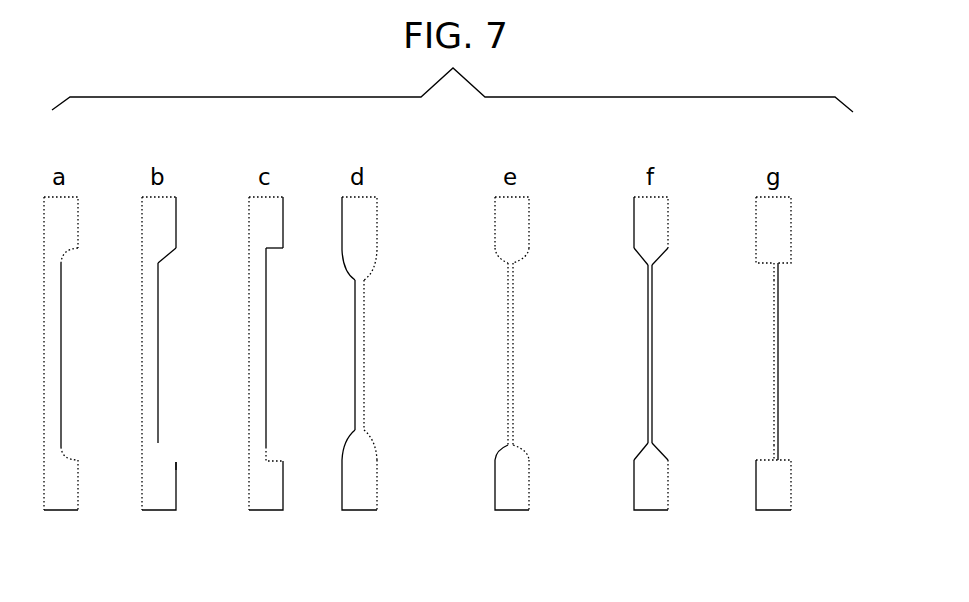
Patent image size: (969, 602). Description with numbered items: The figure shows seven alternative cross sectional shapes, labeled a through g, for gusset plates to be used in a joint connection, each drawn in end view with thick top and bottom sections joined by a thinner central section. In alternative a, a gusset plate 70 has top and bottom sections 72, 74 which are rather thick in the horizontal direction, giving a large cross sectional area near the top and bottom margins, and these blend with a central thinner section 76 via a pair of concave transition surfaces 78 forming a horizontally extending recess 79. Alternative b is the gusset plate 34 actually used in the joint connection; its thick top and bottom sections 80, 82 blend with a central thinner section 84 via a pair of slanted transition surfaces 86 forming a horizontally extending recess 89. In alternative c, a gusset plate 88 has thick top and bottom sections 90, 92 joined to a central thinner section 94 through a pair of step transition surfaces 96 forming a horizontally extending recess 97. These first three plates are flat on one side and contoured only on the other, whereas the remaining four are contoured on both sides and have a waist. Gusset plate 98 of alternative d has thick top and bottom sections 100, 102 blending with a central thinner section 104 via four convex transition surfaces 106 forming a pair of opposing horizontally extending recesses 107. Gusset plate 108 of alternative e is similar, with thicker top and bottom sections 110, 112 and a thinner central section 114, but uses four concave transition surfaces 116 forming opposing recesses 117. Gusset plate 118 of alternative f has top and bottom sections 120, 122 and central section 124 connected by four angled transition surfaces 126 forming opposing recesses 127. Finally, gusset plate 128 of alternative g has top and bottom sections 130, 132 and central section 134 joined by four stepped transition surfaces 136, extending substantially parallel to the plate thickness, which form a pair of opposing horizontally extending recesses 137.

The gusset plate 70 is at (48, 522).
The top section 72 is at (68, 222).
The bottom section 74 is at (66, 492).
The central thinner section 76 is at (66, 318).
The concave transition surfaces 78 is at (64, 258).
The horizontally extending recess 79 is at (66, 378).
The gusset plate 34 is at (188, 190).
The top section 80 is at (168, 222).
The bottom section 82 is at (163, 492).
The central thinner section 84 is at (163, 318).
The slanted transition surfaces 86 is at (162, 258).
The horizontally extending recess 89 is at (163, 378).
The gusset plate 88 is at (296, 190).
The top section 90 is at (276, 222).
The bottom section 92 is at (270, 492).
The central thinner section 94 is at (266, 318).
The step transition surfaces 96 is at (272, 250).
The horizontally extending recess 97 is at (268, 414).
The gusset plate 98 is at (390, 190).
The top section 100 is at (369, 222).
The bottom section 102 is at (367, 492).
The central thinner section 104 is at (362, 318).
The convex transition surfaces 106 is at (372, 256).
The opposing horizontally extending recesses 107 is at (353, 347).
The gusset plate 108 is at (540, 190).
The top section 110 is at (521, 220).
The bottom section 112 is at (518, 492).
The central section 114 is at (516, 355).
The concave transition surfaces 116 is at (520, 252).
The opposing horizontally extending recesses 117 is at (506, 324).
The gusset plate 118 is at (677, 190).
The top section 120 is at (659, 220).
The bottom section 122 is at (658, 492).
The central section 124 is at (655, 348).
The angled transition surfaces 126 is at (660, 256).
The opposing horizontally extending recesses 127 is at (646, 310).
The gusset plate 128 is at (801, 190).
The top section 130 is at (783, 220).
The bottom section 132 is at (782, 492).
The central section 134 is at (780, 318).
The stepped transition surfaces 136 is at (784, 268).
The opposing horizontally extending recesses 137 is at (772, 309).